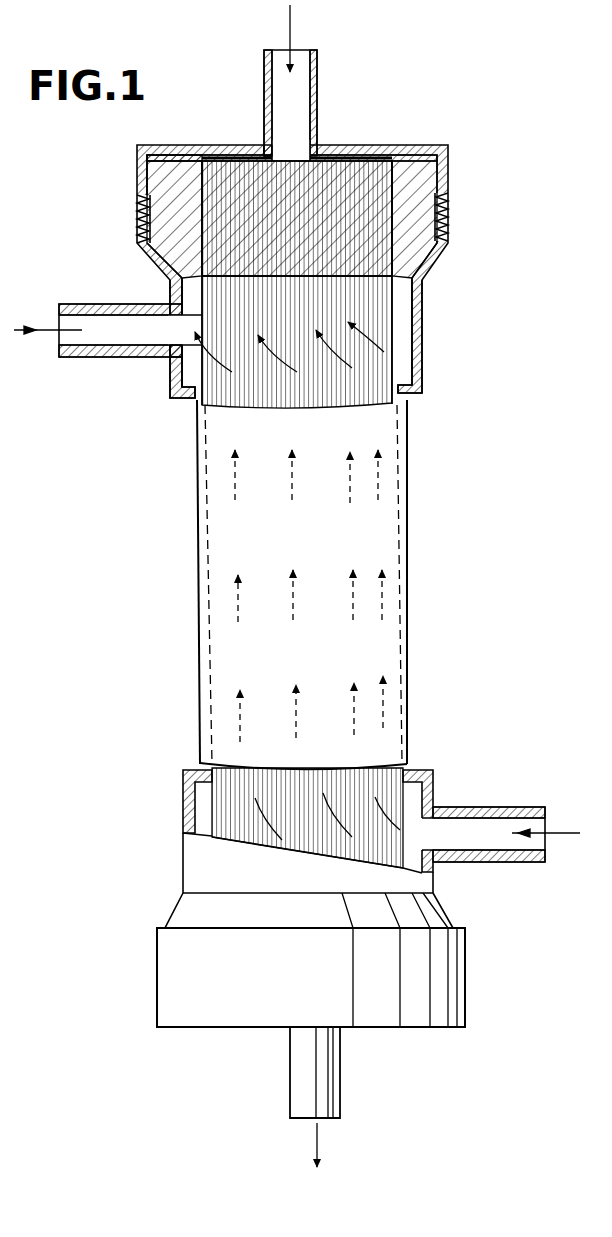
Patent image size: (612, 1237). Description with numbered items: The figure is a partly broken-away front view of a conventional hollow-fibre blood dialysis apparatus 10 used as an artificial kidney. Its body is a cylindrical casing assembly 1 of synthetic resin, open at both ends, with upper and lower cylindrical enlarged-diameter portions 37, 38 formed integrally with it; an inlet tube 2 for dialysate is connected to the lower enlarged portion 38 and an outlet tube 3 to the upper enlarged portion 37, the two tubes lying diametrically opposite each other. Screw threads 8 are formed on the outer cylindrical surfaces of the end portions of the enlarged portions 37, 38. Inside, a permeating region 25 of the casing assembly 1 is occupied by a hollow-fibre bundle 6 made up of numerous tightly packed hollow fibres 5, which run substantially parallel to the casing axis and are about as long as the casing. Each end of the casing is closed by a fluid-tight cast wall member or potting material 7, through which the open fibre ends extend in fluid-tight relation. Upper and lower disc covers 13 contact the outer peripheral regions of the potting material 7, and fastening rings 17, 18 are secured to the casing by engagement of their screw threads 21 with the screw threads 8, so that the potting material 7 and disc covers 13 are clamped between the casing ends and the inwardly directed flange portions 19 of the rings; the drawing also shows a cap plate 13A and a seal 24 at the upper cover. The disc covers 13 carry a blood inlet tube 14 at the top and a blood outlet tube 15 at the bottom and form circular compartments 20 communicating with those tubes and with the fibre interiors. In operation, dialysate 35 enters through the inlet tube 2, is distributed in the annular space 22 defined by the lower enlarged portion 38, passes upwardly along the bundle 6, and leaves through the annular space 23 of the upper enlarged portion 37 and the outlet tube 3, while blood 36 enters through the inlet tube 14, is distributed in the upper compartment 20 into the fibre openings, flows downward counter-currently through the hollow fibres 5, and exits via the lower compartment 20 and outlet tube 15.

The cylindrical casing assembly 1 is at (412, 541).
The inlet tube 2 is at (478, 806).
The outlet tube 3 is at (117, 304).
The hollow fibres 5 is at (388, 293).
The hollow-fibre bundle 6 is at (402, 320).
The cast wall member (potting material) 7 is at (422, 174).
The screw threads 8 is at (450, 211).
The hollow-fibre blood dialysis apparatus 10 is at (464, 252).
The disc covers 13 is at (405, 144).
The cap plate 13A is at (211, 152).
The blood inlet tube 14 is at (315, 88).
The blood outlet tube 15 is at (326, 1080).
The fastening ring 17 is at (137, 179).
The fastening ring 18 is at (455, 968).
The inwardly directed flange portions 19 is at (166, 150).
The circular compartments 20 is at (361, 152).
The screw threads 21 is at (137, 221).
The annular space 22 is at (437, 857).
The annular space 23 is at (172, 352).
The seal 24 is at (272, 147).
The permeating region 25 is at (403, 595).
The dialysate 35 is at (40, 332).
The blood 36 is at (292, 28).
The upper enlarged-diameter portion 37 is at (424, 344).
The lower enlarged-diameter portion 38 is at (183, 812).